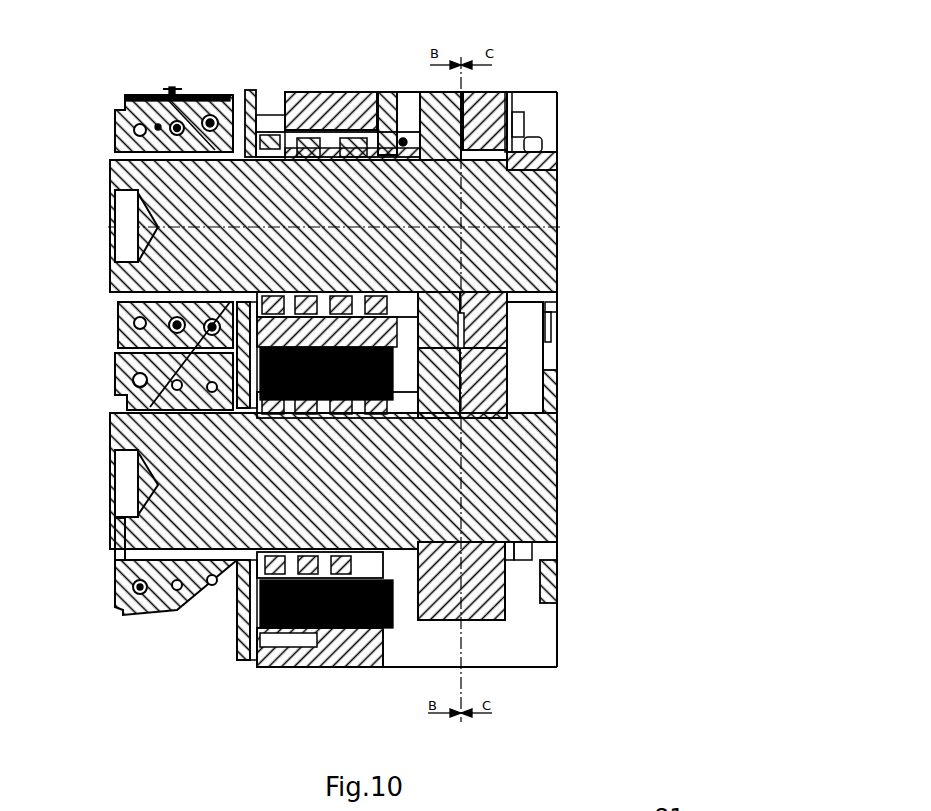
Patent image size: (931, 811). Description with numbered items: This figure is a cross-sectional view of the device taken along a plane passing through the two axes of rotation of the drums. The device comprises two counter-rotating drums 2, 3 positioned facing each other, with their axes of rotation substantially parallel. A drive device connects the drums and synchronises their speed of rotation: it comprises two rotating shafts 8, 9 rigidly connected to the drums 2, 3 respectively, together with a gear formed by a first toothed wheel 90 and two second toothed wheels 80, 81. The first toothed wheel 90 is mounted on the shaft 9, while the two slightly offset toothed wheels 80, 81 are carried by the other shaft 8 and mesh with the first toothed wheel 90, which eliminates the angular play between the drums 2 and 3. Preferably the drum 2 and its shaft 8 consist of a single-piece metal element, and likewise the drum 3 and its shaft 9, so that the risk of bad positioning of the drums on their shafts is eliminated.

The drum 2 is at (120, 160).
The drum 3 is at (120, 562).
The rotating shaft 8 is at (490, 206).
The rotating shaft 9 is at (510, 493).
The second toothed wheel 80 is at (428, 92).
The second toothed wheel 81 is at (493, 92).
The first toothed wheel 90 is at (480, 612).